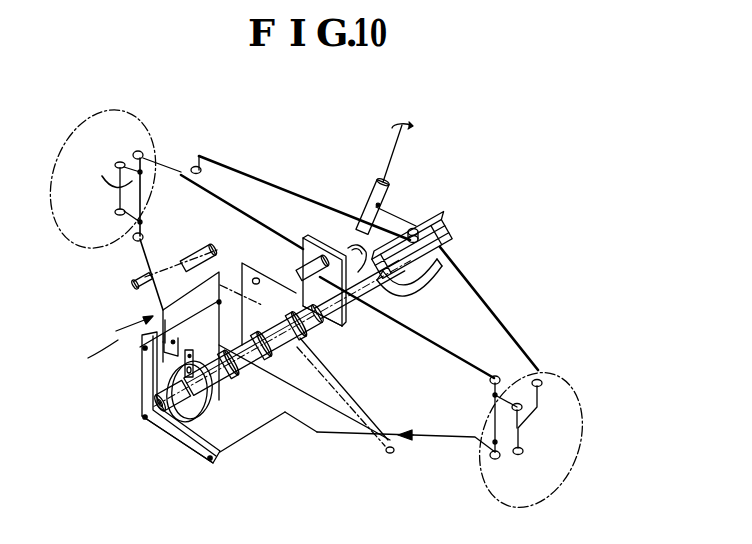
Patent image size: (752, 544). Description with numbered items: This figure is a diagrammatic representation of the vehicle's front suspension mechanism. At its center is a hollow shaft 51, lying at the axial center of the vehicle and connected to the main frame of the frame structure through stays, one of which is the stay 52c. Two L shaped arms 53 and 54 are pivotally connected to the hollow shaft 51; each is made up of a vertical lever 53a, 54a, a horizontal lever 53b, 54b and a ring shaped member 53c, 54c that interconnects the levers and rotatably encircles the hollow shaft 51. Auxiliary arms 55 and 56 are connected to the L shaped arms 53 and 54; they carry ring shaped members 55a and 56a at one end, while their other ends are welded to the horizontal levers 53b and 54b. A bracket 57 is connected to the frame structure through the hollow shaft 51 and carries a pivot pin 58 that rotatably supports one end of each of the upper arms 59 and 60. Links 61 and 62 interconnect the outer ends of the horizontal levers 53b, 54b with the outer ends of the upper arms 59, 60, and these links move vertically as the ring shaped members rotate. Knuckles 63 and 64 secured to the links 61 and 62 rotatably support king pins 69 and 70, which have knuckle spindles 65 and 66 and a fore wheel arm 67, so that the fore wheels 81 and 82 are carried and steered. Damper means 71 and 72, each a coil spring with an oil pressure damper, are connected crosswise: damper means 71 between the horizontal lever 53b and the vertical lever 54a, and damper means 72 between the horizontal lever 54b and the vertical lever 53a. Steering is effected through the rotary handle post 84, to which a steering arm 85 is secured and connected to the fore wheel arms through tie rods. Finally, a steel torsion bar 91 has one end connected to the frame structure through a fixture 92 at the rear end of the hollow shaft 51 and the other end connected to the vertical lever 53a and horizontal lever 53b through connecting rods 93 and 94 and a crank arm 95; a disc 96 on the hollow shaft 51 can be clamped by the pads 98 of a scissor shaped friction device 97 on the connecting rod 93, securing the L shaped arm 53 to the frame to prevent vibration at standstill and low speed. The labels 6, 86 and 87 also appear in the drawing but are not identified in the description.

The hole 6 is at (193, 167).
The hollow shaft 51 is at (208, 395).
The stay 52c is at (357, 261).
The L shaped arm 53 is at (312, 438).
The vertical lever 53a is at (218, 302).
The horizontal lever 53b is at (340, 435).
The ring shaped member 53c is at (226, 374).
The L shaped arm 54 is at (113, 346).
The vertical lever 54a is at (241, 272).
The horizontal lever 54b is at (150, 298).
The ring shaped member 54c is at (266, 364).
The auxiliary arm 55 is at (398, 432).
The ring shaped member 55a is at (282, 360).
The auxiliary arm 56 is at (168, 262).
The ring shaped member 56a is at (300, 266).
The bracket 57 is at (344, 324).
The pivot pin 58 is at (301, 250).
The upper arm 59 is at (460, 360).
The upper arm 60 is at (229, 213).
The link 61 is at (496, 423).
The link 62 is at (142, 198).
The knuckle 63 is at (499, 393).
The knuckle 64 is at (137, 152).
The knuckle spindle 65 is at (524, 432).
The knuckle spindle 66 is at (102, 176).
The fore wheel arm 67 is at (538, 406).
The king pin 69 is at (519, 456).
The king pin 70 is at (116, 212).
The damper means 71 is at (347, 391).
The damper means 72 is at (160, 273).
The fore wheel 81 is at (575, 374).
The fore wheel 82 is at (56, 238).
The rotary handle post 84 is at (376, 204).
The steering arm 85 is at (399, 217).
The arm 86 is at (480, 289).
The top plate 87 is at (278, 186).
The steel torsion bar 91 is at (160, 421).
The fixture 92 is at (450, 244).
The connecting rod 93 is at (91, 356).
The connecting rod 94 is at (266, 427).
The crank arm 95 is at (190, 455).
The disc 96 is at (166, 390).
The scissor shaped friction device 97 is at (164, 352).
The pads 98 is at (220, 455).